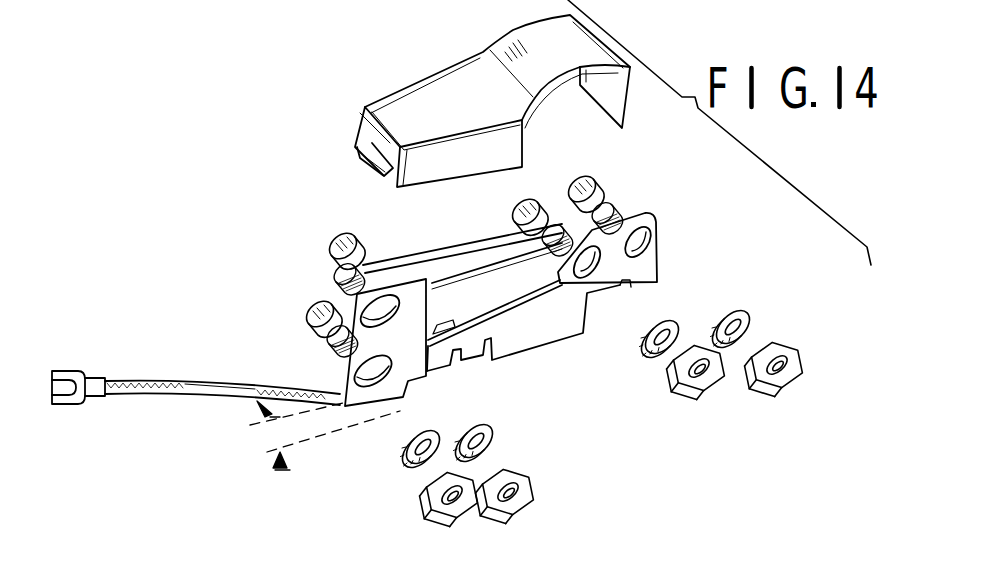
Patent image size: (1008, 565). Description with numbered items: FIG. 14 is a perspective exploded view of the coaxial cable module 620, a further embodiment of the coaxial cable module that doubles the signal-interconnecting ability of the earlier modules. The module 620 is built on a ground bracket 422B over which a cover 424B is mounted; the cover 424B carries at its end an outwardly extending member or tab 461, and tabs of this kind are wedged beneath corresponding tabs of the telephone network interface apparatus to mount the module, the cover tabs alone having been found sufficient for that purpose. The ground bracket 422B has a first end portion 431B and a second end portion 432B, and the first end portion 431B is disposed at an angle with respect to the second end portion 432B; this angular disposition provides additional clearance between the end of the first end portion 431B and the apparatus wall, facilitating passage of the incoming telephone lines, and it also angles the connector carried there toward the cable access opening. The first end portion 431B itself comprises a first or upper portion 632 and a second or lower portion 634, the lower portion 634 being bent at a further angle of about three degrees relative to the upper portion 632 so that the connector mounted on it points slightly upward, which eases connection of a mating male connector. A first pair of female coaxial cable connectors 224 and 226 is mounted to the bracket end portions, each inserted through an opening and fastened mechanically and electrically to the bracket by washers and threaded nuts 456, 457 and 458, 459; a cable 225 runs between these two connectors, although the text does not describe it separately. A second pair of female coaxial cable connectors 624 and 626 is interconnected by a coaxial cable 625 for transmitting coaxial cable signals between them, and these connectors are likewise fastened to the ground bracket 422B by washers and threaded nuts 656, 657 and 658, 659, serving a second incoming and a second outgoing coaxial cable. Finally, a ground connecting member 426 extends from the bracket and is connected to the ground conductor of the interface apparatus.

The cover 424B is at (450, 97).
The tab 461 is at (372, 165).
The coaxial cable module 620 is at (290, 183).
The female coaxial cable connector 224 is at (330, 251).
The bar 225 is at (470, 254).
The female coaxial cable connector 226 is at (528, 200).
The female coaxial cable connector 626 is at (597, 195).
The second end portion 432B is at (668, 246).
The first or upper portion 632 is at (347, 312).
The female coaxial cable connector 624 is at (320, 333).
The second or lower portion 634 is at (352, 372).
The first end portion 431B is at (335, 378).
The ground connecting member 426 is at (176, 388).
The coaxial cable 625 is at (450, 290).
The ground bracket 422B is at (556, 328).
The washer 458 is at (668, 313).
The washer 658 is at (746, 314).
The threaded nut 659 is at (798, 354).
The threaded nut 459 is at (720, 358).
The washer 456 is at (492, 448).
The washer 656 is at (410, 454).
The threaded nut 657 is at (433, 503).
The threaded nut 457 is at (531, 487).